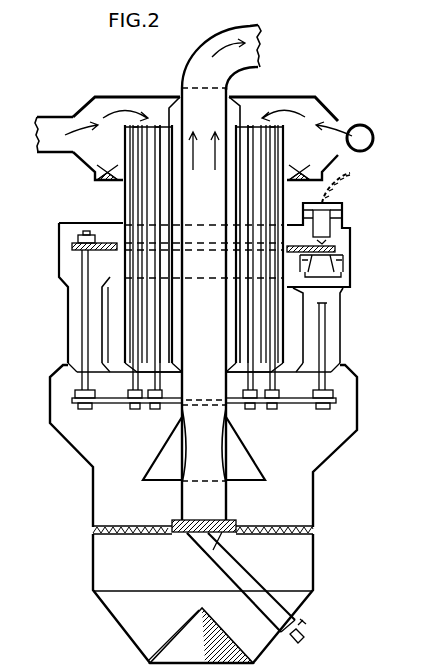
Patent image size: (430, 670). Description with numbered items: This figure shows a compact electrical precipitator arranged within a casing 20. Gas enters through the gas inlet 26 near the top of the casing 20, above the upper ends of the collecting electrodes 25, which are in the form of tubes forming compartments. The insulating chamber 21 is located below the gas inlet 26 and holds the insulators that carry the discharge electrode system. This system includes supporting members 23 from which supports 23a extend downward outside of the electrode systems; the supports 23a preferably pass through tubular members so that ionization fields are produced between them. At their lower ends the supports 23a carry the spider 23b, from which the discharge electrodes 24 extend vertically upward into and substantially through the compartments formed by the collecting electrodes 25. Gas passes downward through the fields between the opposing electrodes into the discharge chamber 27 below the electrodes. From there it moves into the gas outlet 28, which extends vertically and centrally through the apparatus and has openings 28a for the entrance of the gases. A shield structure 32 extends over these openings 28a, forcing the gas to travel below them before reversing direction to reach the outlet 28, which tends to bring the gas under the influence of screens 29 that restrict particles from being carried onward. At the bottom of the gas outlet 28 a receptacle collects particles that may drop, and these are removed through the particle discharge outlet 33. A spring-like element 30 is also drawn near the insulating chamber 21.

The casing 20 is at (358, 412).
The insulating chamber 21 is at (342, 238).
The supporting members 23 is at (108, 243).
The supports 23a is at (82, 333).
The spider 23b is at (115, 404).
The discharge electrodes 24 is at (274, 199).
The collecting electrodes 25 is at (145, 308).
The gas inlet 26 is at (40, 133).
The discharge chamber 27 is at (203, 578).
The gas outlet 28 is at (215, 278).
The openings 28a is at (222, 452).
The screens 29 is at (290, 528).
The spring 30 is at (350, 172).
The shield structure 32 is at (262, 475).
The particle discharge outlet 33 is at (242, 578).